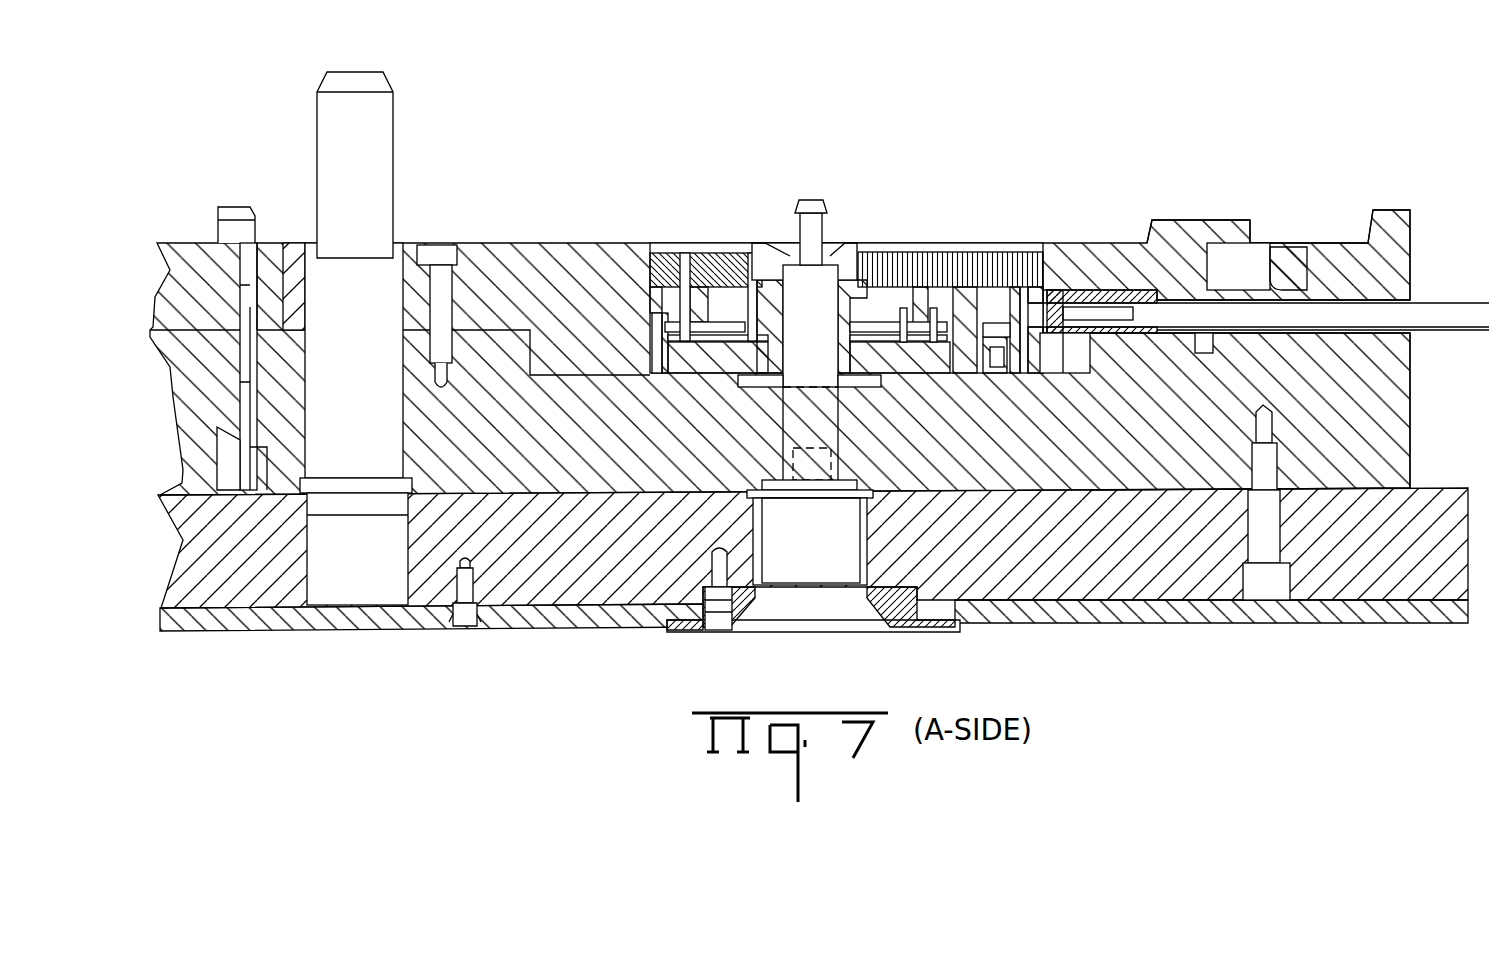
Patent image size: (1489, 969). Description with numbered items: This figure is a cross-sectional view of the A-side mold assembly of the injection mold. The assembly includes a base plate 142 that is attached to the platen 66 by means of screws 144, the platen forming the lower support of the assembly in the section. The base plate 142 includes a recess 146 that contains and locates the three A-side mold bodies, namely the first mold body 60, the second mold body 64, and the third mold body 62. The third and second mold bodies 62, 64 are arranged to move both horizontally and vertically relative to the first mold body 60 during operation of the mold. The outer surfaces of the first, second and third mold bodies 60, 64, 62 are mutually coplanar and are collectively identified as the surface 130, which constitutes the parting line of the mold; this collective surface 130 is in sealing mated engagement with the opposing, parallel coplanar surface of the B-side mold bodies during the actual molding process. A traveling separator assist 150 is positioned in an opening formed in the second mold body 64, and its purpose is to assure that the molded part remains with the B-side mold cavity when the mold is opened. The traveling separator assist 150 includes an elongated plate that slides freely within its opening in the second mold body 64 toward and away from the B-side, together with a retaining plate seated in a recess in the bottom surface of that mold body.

The first mold body 60 is at (912, 243).
The third mold body 62 is at (1098, 243).
The second mold body 64 is at (1000, 243).
The platen 66 is at (1470, 530).
The collective surface 130 is at (565, 242).
The base plate 142 is at (1412, 414).
The screws 144 is at (1268, 578).
The recess 146 is at (1080, 373).
The traveling separator assist 150 is at (1001, 382).